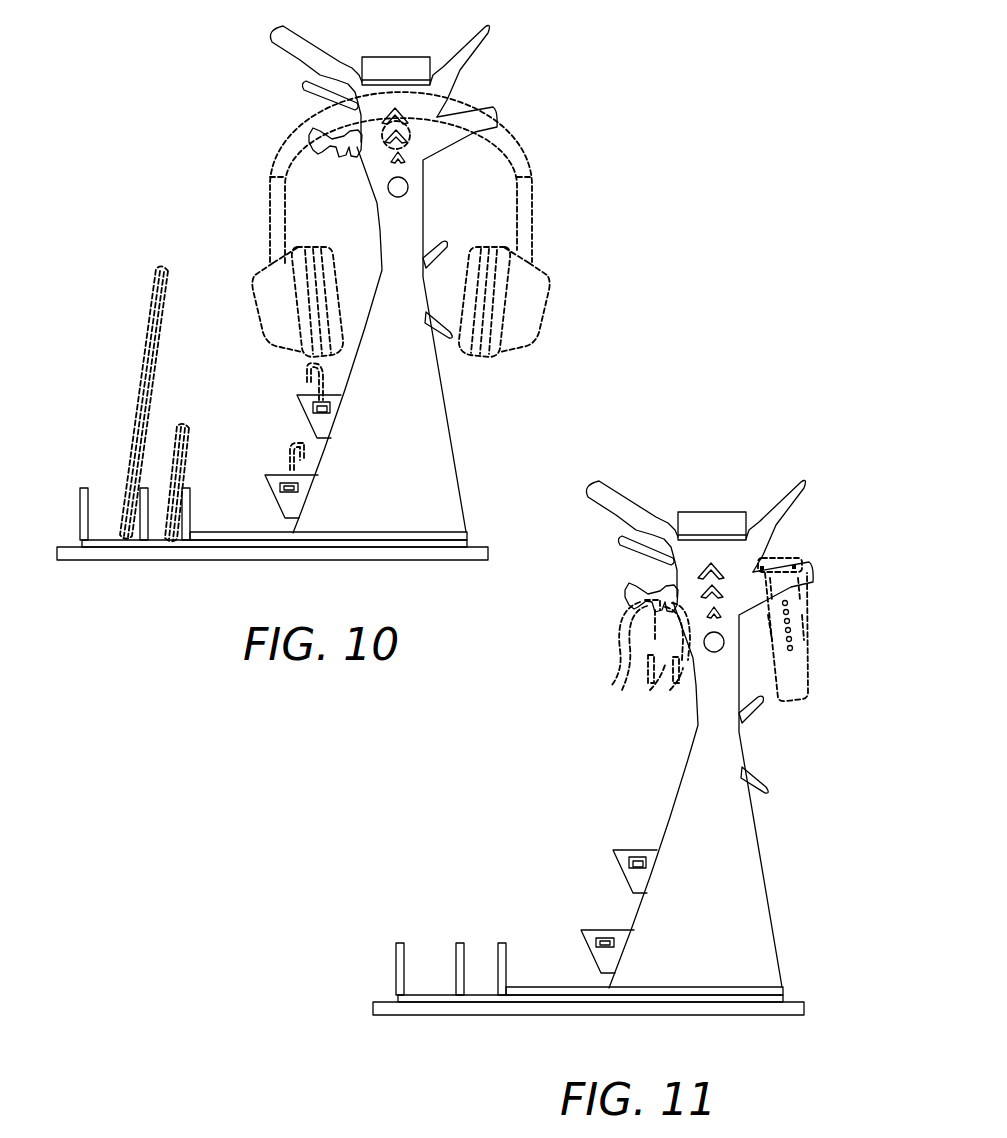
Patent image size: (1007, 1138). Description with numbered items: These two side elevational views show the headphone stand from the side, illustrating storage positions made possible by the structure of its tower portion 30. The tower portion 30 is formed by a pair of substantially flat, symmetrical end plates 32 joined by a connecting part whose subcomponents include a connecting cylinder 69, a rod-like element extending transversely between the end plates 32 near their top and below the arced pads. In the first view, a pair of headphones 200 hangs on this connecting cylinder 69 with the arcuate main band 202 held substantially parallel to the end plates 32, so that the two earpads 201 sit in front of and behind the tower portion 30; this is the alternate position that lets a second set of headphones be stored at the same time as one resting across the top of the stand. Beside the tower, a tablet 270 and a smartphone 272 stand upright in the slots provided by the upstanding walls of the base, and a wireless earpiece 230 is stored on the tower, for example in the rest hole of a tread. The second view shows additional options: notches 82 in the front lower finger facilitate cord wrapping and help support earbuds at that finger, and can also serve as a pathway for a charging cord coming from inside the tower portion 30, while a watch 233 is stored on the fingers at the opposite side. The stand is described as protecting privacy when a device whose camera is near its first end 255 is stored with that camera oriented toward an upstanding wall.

In FIG. 10, the tower portion 30 is at (452, 432).
In FIG. 10, the end plates 32 is at (461, 480).
In FIG. 10, the connecting cylinder 69 is at (387, 140).
In FIG. 11, the notches 82 is at (658, 598).
In FIG. 10, the headphones 200 is at (535, 207).
In FIG. 10, the earpads 201 is at (255, 320).
In FIG. 10, the main band 202 is at (507, 128).
In FIG. 10, the wireless earpiece 230 is at (300, 380).
In FIG. 11, the watch 233 is at (812, 668).
In FIG. 11, the first end 255 is at (653, 683).
In FIG. 10, the tablet 270 is at (145, 356).
In FIG. 10, the smartphone 272 is at (190, 425).